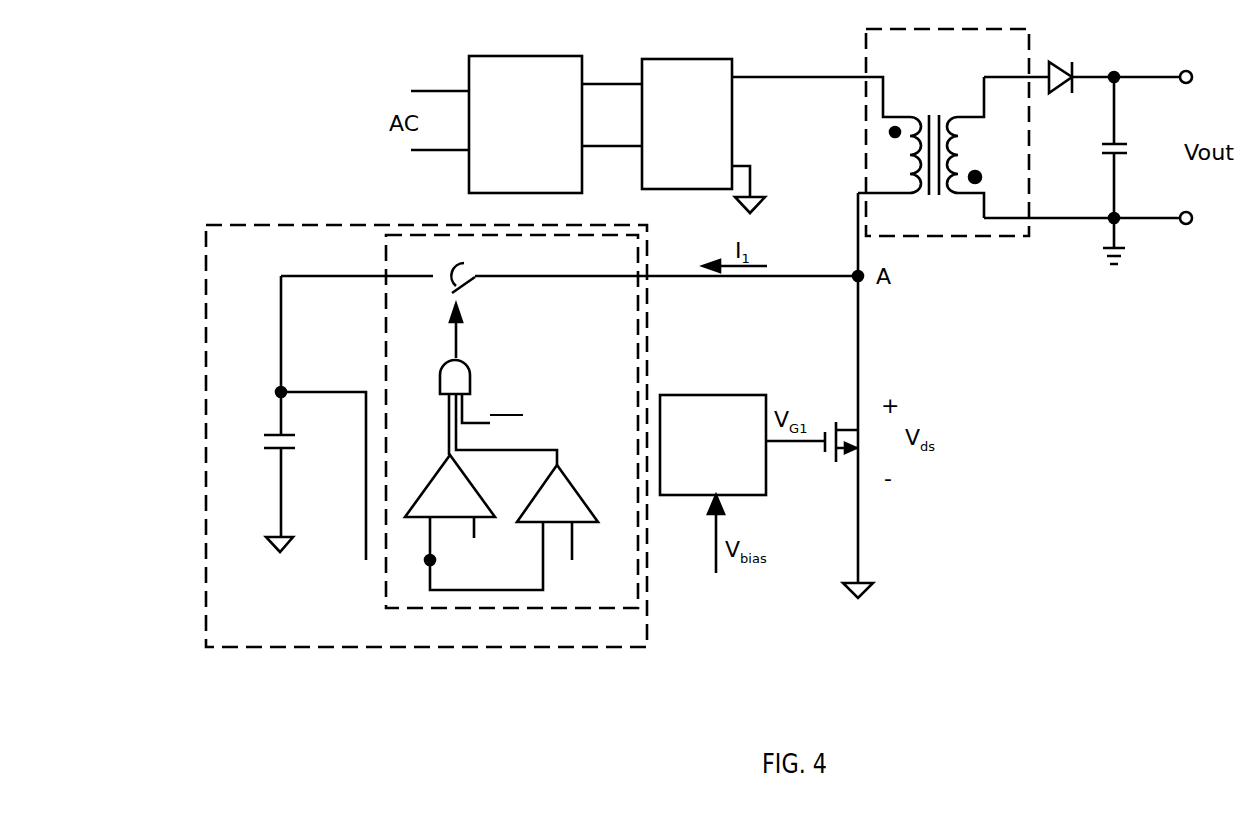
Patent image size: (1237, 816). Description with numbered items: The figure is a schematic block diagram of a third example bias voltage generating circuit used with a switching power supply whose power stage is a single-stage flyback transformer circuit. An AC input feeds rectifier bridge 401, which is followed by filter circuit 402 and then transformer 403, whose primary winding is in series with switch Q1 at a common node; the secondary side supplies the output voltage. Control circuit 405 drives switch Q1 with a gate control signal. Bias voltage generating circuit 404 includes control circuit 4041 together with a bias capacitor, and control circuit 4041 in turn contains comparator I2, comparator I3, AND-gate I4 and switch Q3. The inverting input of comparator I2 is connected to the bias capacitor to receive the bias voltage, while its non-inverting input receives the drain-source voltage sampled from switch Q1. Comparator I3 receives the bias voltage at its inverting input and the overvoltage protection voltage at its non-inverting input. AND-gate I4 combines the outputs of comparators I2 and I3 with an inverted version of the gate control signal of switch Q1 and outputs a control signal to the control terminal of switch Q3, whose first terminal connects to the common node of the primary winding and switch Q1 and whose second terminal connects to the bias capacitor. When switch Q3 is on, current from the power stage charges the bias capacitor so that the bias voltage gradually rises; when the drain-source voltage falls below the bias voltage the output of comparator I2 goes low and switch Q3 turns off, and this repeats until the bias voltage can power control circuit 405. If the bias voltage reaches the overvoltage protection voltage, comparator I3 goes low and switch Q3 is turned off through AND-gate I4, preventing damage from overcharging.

The rectifier bridge 401 is at (543, 165).
The filter circuit 402 is at (705, 165).
The transformer 403 is at (936, 31).
The bias voltage generating circuit 404 is at (426, 464).
The control circuit 4041 is at (512, 463).
The control circuit 405 is at (730, 487).
The switch Q1 is at (827, 510).
The switch Q3 is at (389, 270).
The comparator I2 is at (460, 497).
The comparator I3 is at (568, 506).
The AND-gate I4 is at (460, 373).